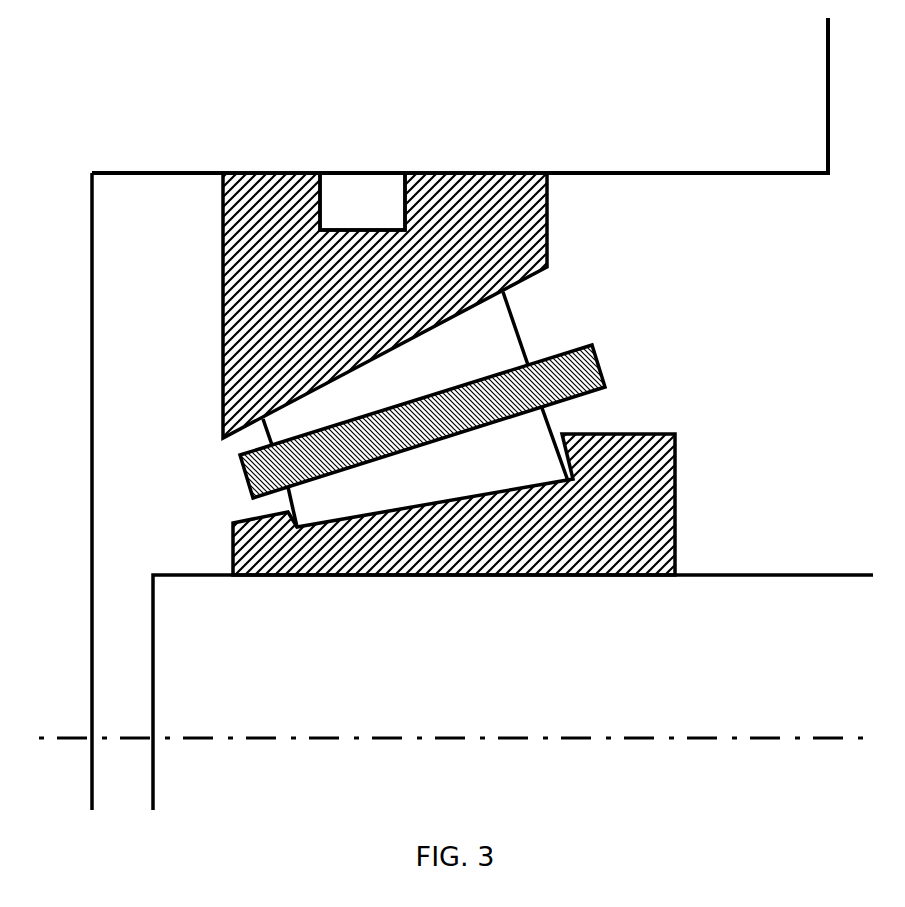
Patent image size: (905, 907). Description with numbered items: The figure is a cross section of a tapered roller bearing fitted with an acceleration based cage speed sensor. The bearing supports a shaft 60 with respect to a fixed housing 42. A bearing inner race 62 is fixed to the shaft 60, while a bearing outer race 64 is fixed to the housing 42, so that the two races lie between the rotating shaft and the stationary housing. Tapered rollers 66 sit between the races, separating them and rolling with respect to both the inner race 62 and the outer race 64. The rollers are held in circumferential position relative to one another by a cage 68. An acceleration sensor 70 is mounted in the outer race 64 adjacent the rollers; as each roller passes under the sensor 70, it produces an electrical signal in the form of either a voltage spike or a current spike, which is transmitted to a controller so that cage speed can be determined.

The fixed housing 42 is at (673, 142).
The shaft 60 is at (478, 650).
The bearing inner race 62 is at (233, 555).
The bearing outer race 64 is at (222, 238).
The tapered rollers 66 is at (518, 330).
The cage 68 is at (600, 367).
The acceleration sensor 70 is at (405, 172).